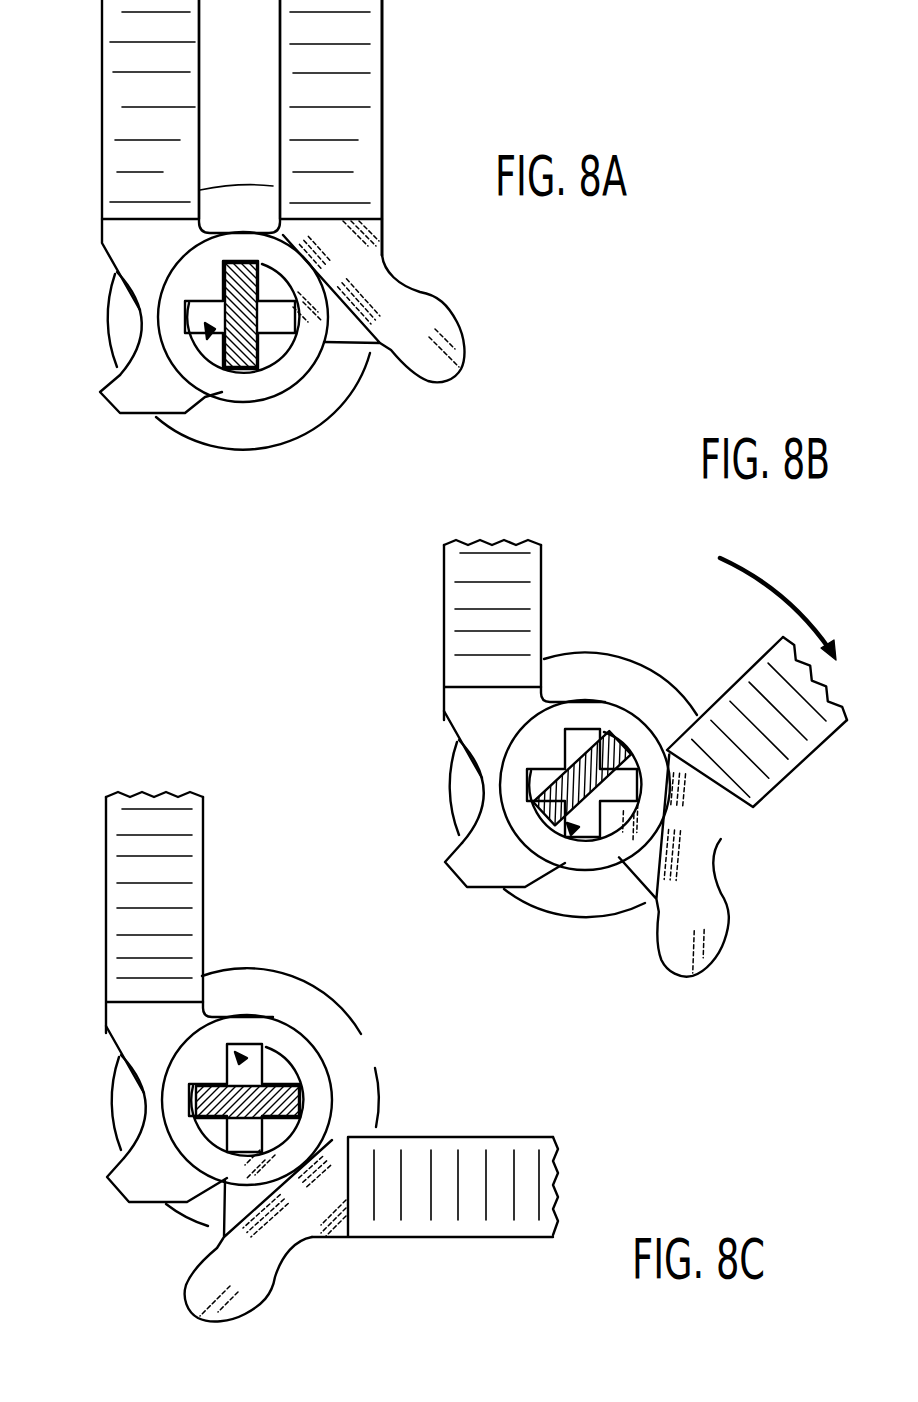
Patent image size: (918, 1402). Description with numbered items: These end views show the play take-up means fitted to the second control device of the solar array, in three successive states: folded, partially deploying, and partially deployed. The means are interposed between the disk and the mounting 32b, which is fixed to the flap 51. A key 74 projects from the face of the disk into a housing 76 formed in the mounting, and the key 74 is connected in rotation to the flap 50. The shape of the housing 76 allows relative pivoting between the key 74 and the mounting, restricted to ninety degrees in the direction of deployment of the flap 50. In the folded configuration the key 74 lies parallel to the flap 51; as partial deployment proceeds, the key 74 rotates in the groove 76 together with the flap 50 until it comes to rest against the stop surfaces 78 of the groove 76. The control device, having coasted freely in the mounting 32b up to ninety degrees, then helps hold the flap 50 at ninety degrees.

In FIG. 8A, the flap 50 is at (365, 57).
In FIG. 8B, the flap 50 is at (793, 722).
In FIG. 8C, the flap 50 is at (443, 1198).
In FIG. 8A, the flap 51 is at (142, 28).
In FIG. 8B, the flap 51 is at (508, 595).
In FIG. 8C, the flap 51 is at (145, 843).
In FIG. 8A, the mounting 32b is at (233, 385).
In FIG. 8B, the mounting 32b is at (593, 717).
In FIG. 8C, the mounting 32b is at (247, 1172).
In FIG. 8A, the key 74 is at (233, 352).
In FIG. 8B, the key 74 is at (617, 750).
In FIG. 8C, the key 74 is at (253, 1100).
In FIG. 8A, the housing 76 is at (193, 312).
In FIG. 8B, the housing 76 is at (572, 826).
In FIG. 8C, the housing 76 is at (250, 1050).
In FIG. 8B, the stop surfaces 78 is at (490, 770).
In FIG. 8C, the stop surfaces 78 is at (160, 1108).